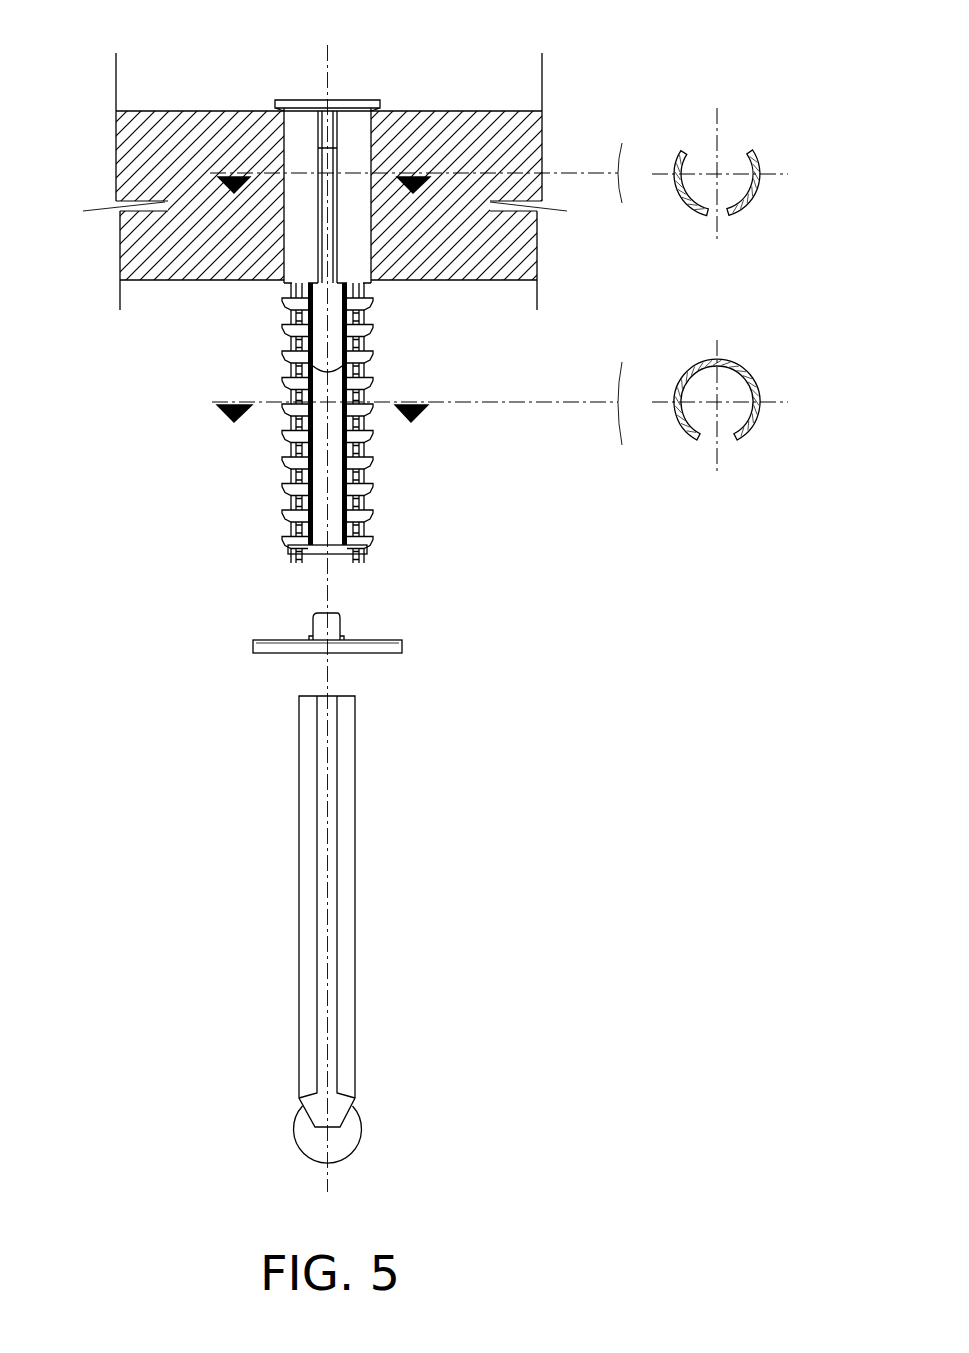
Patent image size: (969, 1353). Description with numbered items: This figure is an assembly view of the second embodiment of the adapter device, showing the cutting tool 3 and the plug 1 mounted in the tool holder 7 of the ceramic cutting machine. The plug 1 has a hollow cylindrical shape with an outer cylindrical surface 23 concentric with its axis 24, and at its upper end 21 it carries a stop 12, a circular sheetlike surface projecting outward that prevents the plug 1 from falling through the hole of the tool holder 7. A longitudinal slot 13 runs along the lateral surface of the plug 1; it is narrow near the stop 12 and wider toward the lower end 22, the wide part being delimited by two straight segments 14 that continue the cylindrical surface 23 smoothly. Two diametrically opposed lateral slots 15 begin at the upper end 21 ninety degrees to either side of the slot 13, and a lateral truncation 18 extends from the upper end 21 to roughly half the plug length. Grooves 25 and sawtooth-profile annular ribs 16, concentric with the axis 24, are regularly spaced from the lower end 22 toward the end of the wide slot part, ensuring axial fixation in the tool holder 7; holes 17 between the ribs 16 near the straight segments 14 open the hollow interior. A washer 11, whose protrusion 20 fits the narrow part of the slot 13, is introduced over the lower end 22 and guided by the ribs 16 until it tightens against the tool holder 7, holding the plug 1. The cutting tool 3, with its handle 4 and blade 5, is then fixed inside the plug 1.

The plug 1 is at (501, 306).
The cutting tool 3 is at (424, 929).
The handle of the cutting tool 4 is at (338, 963).
The blade 5 is at (355, 1131).
The tool holder 7 is at (182, 167).
The washer 11 is at (377, 642).
The stop 12 is at (336, 182).
The slot 13 is at (565, 318).
The straight segments 14 is at (348, 390).
The slots 15 is at (760, 176).
The ribs 16 is at (289, 500).
The holes 17 is at (367, 518).
The lateral truncation 18 is at (726, 147).
The protrusion 20 is at (327, 627).
The upper end 21 is at (398, 105).
The lower end 22 is at (385, 557).
The cylindrical surface 23 is at (298, 258).
The axis 24 is at (322, 58).
The grooves 25 is at (291, 530).